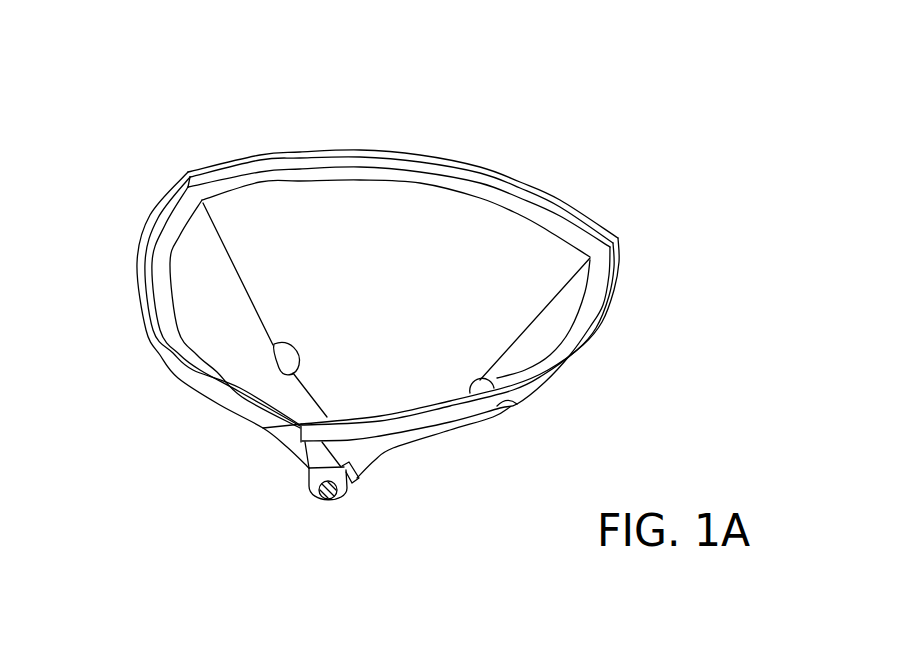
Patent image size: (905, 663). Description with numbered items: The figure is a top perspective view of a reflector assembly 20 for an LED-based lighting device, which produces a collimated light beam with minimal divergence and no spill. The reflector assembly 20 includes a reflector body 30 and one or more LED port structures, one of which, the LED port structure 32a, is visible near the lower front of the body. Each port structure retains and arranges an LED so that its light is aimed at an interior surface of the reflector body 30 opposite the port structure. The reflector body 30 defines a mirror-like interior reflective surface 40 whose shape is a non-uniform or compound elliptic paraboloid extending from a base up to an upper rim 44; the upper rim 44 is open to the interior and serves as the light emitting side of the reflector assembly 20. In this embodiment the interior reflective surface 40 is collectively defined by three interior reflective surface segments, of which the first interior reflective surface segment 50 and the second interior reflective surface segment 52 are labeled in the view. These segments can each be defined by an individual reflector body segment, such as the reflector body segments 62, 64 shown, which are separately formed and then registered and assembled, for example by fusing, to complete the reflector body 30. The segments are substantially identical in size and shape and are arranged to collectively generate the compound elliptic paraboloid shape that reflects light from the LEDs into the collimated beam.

The reflector assembly 20 is at (653, 107).
The reflector body 30 is at (150, 362).
The upper rim 44 is at (265, 164).
The interior reflective surface 40 is at (460, 237).
The first interior reflective surface segment 50 is at (432, 305).
The second interior reflective surface segment 52 is at (230, 324).
The reflector body segment 62 is at (263, 428).
The reflector body segment 64 is at (393, 445).
The LED port structure 32a is at (343, 502).